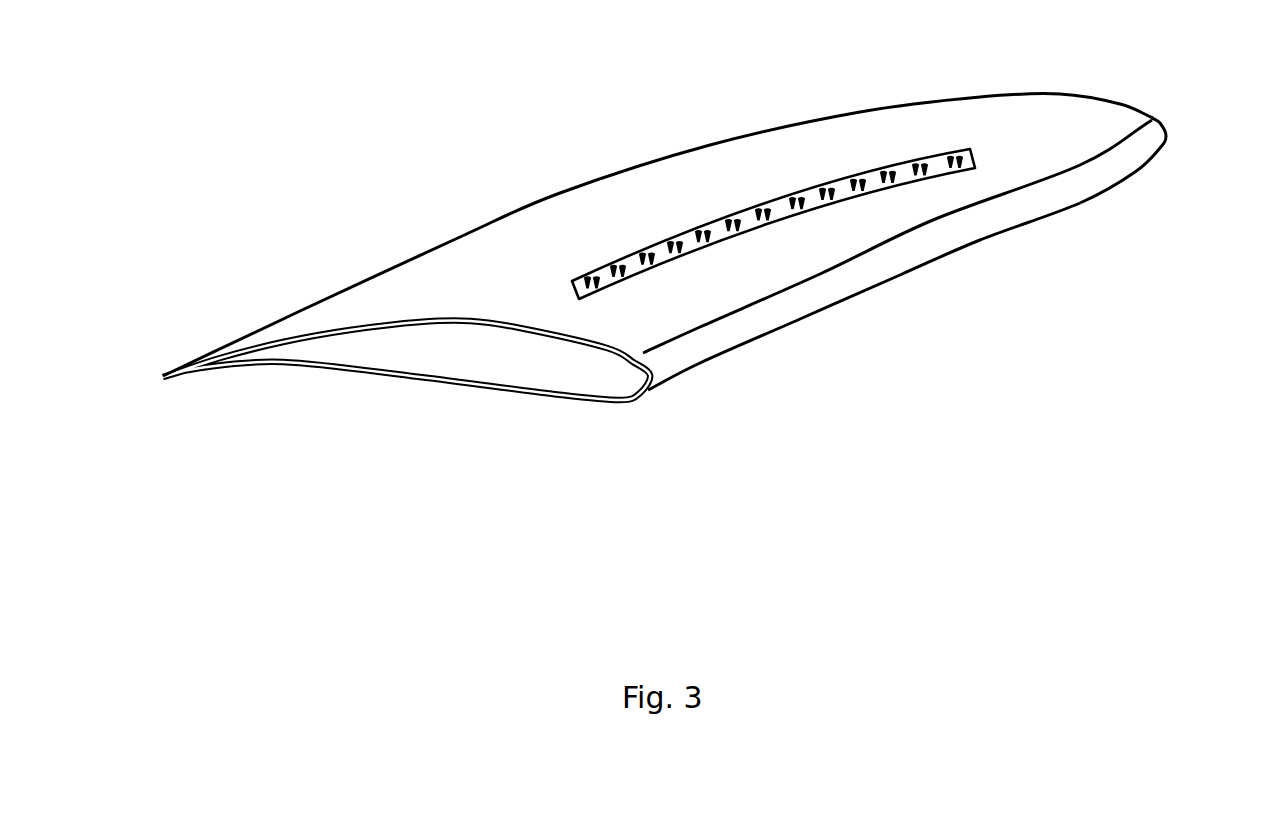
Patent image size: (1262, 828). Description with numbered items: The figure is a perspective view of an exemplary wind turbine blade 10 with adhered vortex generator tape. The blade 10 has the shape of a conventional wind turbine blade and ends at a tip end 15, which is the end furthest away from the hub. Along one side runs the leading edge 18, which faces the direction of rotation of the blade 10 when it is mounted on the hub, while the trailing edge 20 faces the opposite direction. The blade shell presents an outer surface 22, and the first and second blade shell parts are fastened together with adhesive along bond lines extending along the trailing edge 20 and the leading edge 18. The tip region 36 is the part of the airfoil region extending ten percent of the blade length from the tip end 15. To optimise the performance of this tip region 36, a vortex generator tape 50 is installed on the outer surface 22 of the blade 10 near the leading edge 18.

The wind turbine blade 10 is at (292, 266).
The tip end 15 is at (1150, 118).
The leading edge 18 is at (778, 315).
The trailing edge 20 is at (458, 238).
The outer surface 22 is at (580, 223).
The tip region 36 is at (669, 174).
The vortex generator tape 50 is at (858, 158).